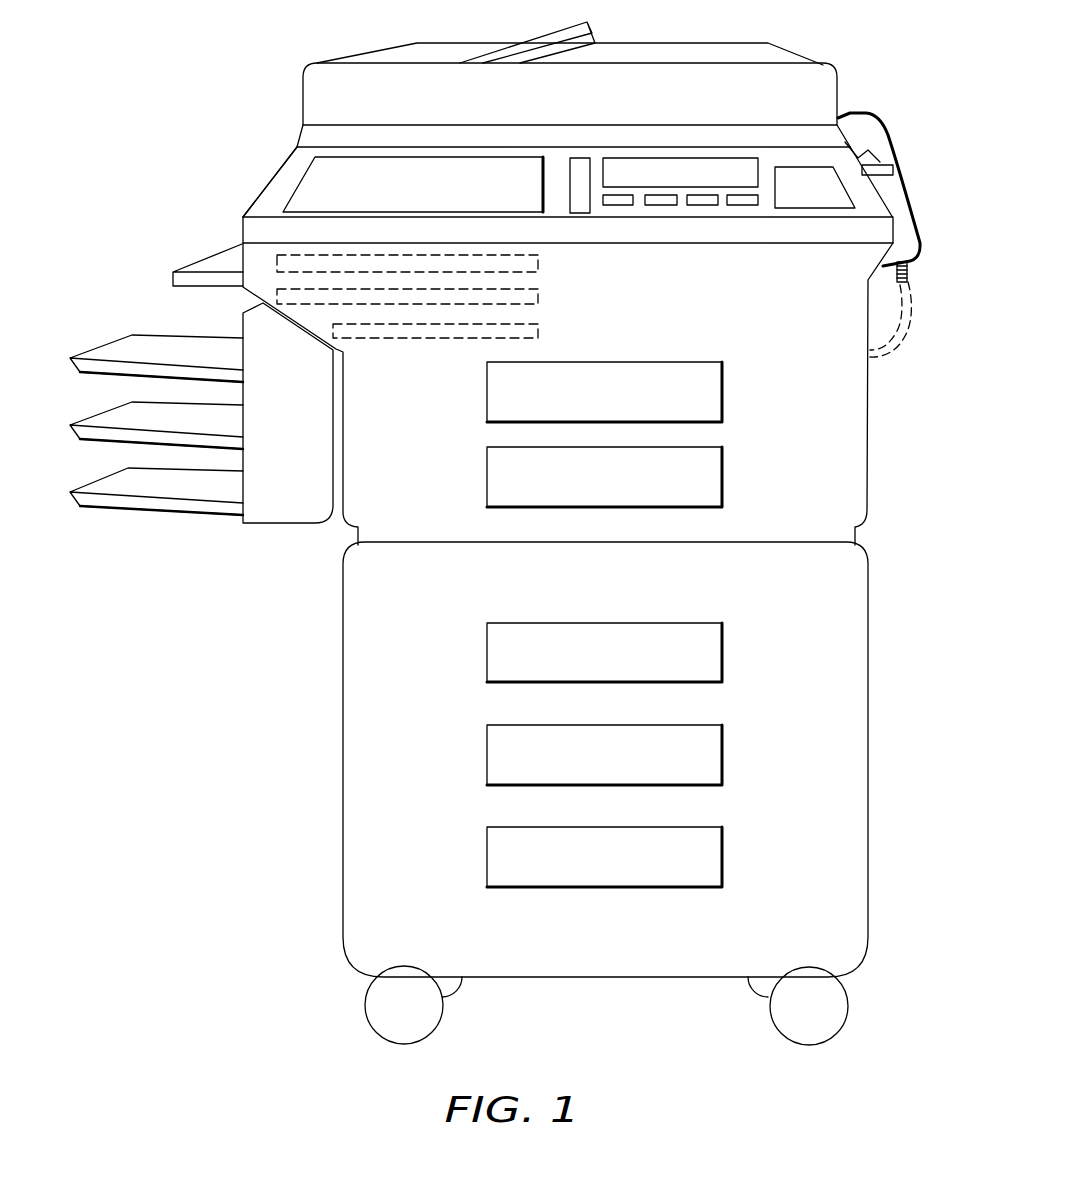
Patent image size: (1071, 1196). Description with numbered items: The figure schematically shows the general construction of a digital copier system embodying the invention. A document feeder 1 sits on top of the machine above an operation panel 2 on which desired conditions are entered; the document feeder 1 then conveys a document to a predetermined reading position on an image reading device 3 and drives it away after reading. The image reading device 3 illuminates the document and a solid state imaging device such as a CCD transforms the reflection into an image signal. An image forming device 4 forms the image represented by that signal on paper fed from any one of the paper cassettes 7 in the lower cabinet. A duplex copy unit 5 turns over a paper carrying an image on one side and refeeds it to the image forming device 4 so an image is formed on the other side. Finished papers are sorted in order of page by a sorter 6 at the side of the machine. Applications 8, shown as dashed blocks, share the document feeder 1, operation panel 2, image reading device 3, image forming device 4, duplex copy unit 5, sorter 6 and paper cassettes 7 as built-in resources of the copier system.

The document feeder 1 is at (823, 70).
The operation panel 2 is at (382, 160).
The image reading device 3 is at (254, 179).
The image forming device 4 is at (715, 400).
The duplex copy unit 5 is at (718, 487).
The sorter 6 is at (136, 518).
The paper cassettes 7 is at (708, 725).
The applications 8 is at (556, 294).